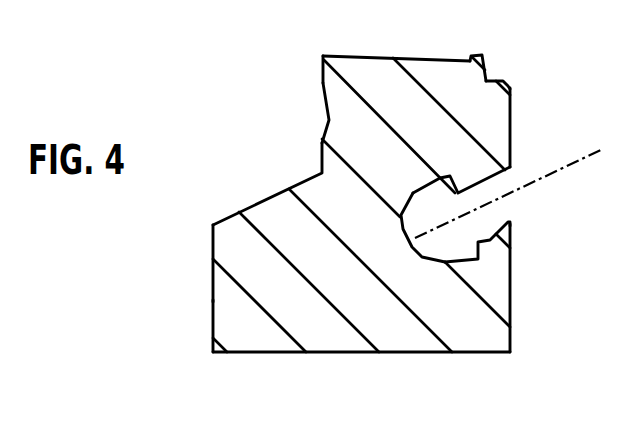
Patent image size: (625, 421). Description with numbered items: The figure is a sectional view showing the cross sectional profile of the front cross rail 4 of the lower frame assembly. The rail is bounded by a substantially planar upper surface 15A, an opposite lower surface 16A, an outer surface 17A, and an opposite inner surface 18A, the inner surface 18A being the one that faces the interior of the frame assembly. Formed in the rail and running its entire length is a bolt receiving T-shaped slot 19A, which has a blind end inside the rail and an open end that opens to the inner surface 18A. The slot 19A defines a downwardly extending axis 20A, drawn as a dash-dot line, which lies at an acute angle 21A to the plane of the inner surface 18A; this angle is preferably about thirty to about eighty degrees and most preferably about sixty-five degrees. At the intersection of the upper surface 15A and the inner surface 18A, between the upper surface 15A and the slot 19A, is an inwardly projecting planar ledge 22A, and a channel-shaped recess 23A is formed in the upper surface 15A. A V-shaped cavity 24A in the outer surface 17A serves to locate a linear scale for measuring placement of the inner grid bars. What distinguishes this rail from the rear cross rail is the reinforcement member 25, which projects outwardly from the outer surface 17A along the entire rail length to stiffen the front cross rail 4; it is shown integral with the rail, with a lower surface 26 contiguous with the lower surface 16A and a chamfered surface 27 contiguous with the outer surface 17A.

The front cross rail 4 is at (244, 134).
The upper surface 15A is at (369, 56).
The lower surface 16A is at (440, 355).
The outer surface 17A is at (321, 81).
The inner surface 18A is at (512, 309).
The T-shaped slot 19A is at (399, 242).
The axis 20A is at (513, 194).
The acute angle 21A is at (519, 122).
The ledge 22A is at (497, 80).
The channel-shaped recess 23A is at (434, 60).
The V-shaped cavity 24A is at (327, 120).
The reinforcement member 25 is at (232, 250).
The lower surface 26 is at (260, 354).
The chamfered surface 27 is at (268, 196).